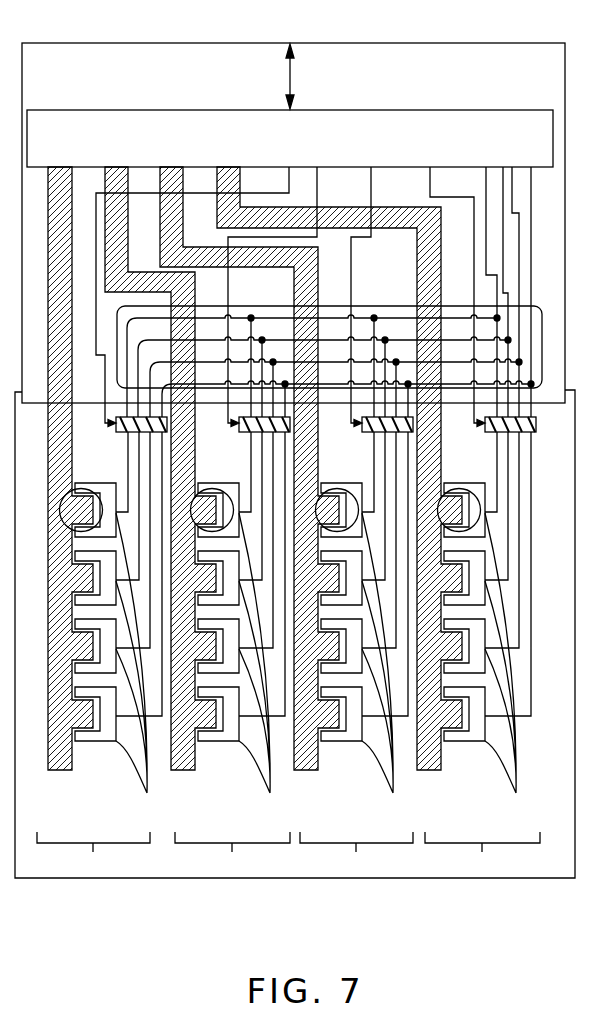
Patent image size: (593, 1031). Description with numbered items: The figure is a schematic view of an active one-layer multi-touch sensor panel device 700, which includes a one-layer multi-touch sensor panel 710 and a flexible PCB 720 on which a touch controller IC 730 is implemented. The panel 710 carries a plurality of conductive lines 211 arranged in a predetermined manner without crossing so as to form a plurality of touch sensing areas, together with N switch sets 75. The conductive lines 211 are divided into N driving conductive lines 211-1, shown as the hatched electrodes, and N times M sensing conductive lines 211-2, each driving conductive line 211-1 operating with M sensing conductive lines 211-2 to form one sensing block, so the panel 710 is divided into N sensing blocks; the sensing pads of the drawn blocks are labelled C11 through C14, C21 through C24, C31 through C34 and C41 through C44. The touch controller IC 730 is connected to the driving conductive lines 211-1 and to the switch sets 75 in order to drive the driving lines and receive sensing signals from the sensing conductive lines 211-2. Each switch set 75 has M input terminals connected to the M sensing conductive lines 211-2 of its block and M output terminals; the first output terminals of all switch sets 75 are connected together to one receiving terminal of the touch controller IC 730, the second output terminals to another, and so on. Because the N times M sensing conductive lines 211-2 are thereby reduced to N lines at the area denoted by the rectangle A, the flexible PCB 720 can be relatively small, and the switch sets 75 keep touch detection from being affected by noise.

The active one-layer multi-touch sensor panel device 700 is at (96, 27).
The one-layer multi-touch sensor panel 710 is at (290, 879).
The flexible PCB 720 is at (289, 43).
The touch controller IC 730 is at (97, 109).
The switch set 75 is at (102, 436).
The rectangle A is at (543, 340).
The conductive lines 211 is at (288, 853).
The driving conductive line 211-1 is at (60, 771).
The sensing conductive line 211-2 is at (298, 644).
The capacitor C11 is at (88, 499).
The capacitor C14 is at (95, 728).
The capacitor C21 is at (215, 499).
The capacitor C24 is at (218, 728).
The capacitor C31 is at (339, 499).
The capacitor C34 is at (341, 728).
The capacitor C41 is at (462, 499).
The capacitor C44 is at (464, 728).